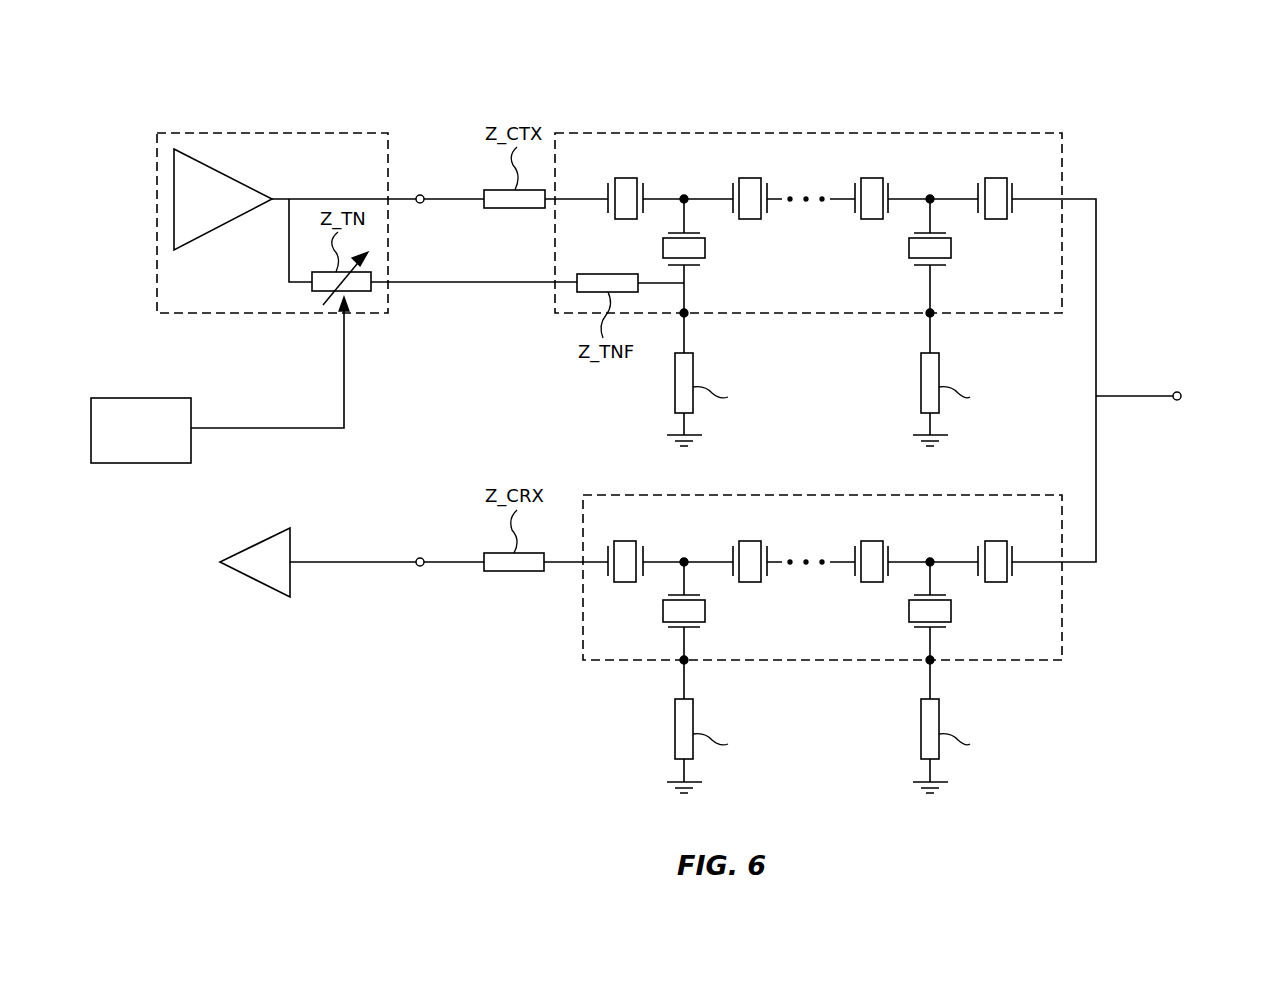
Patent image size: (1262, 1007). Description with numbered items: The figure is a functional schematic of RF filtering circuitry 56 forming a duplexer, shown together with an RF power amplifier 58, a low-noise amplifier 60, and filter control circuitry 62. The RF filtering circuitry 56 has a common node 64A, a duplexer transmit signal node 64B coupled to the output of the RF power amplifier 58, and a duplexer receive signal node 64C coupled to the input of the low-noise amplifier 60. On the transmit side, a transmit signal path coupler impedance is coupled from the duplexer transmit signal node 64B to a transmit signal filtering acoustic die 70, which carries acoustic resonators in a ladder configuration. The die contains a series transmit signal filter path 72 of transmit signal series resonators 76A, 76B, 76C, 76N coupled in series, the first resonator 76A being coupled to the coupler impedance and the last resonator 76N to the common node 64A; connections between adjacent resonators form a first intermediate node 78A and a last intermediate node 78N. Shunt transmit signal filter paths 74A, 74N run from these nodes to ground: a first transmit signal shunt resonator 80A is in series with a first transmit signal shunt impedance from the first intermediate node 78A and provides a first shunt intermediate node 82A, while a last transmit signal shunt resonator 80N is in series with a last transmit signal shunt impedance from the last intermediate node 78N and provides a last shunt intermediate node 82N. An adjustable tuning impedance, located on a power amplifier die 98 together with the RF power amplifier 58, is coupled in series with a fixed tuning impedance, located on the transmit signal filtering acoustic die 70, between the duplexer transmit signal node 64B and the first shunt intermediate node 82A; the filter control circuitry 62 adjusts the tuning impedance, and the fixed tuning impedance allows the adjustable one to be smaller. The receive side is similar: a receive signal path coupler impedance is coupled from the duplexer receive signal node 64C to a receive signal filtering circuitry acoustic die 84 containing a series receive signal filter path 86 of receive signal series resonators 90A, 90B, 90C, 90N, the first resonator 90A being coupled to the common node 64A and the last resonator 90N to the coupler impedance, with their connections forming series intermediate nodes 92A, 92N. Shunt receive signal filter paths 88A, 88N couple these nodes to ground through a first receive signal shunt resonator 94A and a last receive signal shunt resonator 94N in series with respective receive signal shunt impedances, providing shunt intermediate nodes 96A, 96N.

The RF filtering circuitry 56 is at (927, 83).
The RF power amplifier 58 is at (223, 199).
The low-noise amplifier 60 is at (255, 562).
The filter control circuitry 62 is at (220, 380).
The common node 64A is at (1180, 392).
The duplexer transmit signal node 64B is at (421, 194).
The duplexer receive signal node 64C is at (421, 557).
The transmit signal filtering acoustic die 70 is at (808, 223).
The series transmit signal filter path 72 is at (780, 222).
The shunt branch 74A is at (723, 340).
The shunt branch 74N is at (965, 340).
The first transmit signal series resonator 76A is at (626, 178).
The series acoustic resonator 76B is at (750, 178).
The series acoustic resonator 76C is at (872, 178).
The last transmit signal series resonator 76N is at (996, 178).
The first intermediate node 78A is at (684, 199).
The last intermediate node 78N is at (930, 199).
The first transmit signal shunt resonator 80A is at (705, 248).
The last transmit signal shunt resonator 80N is at (951, 248).
The first shunt intermediate node 82A is at (684, 313).
The last shunt intermediate node 82N is at (930, 313).
The receive signal filtering circuitry acoustic die 84 is at (822, 577).
The series receive signal filter path 86 is at (780, 587).
The shunt branch 88A is at (965, 688).
The shunt branch 88N is at (722, 688).
The first receive signal series resonator 90A is at (996, 541).
The series acoustic resonator 90B is at (872, 541).
The series acoustic resonator 90C is at (750, 541).
The last receive signal series resonator 90N is at (625, 541).
The first series intermediate node 92A is at (930, 562).
The last series intermediate node 92N is at (684, 562).
The first receive signal shunt resonator 94A is at (951, 611).
The last receive signal shunt resonator 94N is at (705, 611).
The first shunt intermediate node 96A is at (930, 660).
The second shunt intermediate node 96N is at (684, 660).
The power amplifier die 98 is at (272, 223).